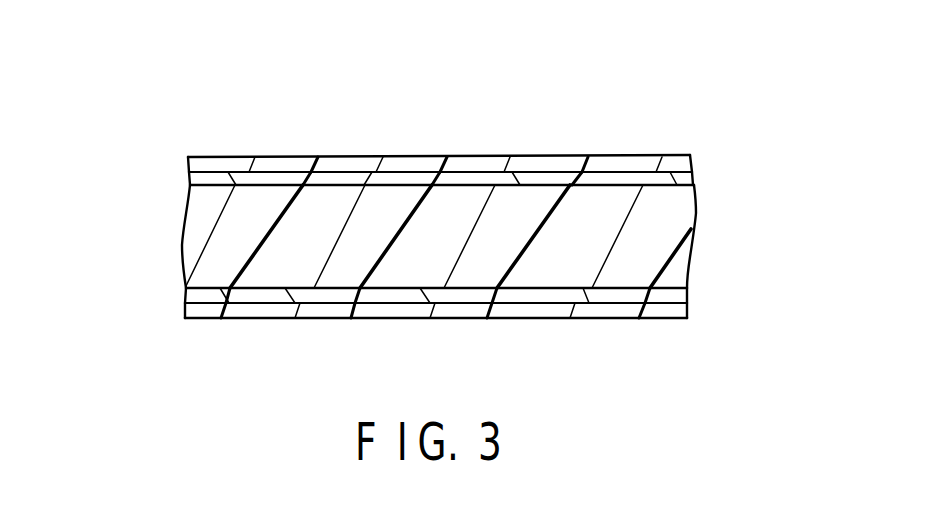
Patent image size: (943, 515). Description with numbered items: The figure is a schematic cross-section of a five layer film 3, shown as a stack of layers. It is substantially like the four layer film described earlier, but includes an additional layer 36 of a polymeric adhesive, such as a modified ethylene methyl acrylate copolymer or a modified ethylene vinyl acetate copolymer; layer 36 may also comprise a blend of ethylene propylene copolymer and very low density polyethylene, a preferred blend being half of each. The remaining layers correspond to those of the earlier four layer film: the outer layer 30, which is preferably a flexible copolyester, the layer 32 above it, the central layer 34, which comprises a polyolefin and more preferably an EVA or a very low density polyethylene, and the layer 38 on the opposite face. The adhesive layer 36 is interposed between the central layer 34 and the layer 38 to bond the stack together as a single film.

The five layer film 3 is at (443, 166).
The outer layer 30 is at (689, 307).
The layer 32 is at (186, 295).
The central layer 34 is at (692, 247).
The additional layer of polymeric adhesive 36 is at (692, 178).
The layer 38 is at (188, 161).